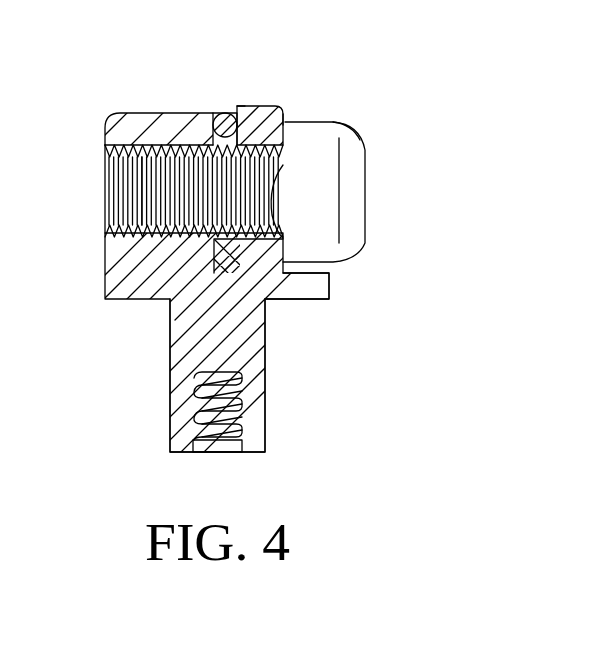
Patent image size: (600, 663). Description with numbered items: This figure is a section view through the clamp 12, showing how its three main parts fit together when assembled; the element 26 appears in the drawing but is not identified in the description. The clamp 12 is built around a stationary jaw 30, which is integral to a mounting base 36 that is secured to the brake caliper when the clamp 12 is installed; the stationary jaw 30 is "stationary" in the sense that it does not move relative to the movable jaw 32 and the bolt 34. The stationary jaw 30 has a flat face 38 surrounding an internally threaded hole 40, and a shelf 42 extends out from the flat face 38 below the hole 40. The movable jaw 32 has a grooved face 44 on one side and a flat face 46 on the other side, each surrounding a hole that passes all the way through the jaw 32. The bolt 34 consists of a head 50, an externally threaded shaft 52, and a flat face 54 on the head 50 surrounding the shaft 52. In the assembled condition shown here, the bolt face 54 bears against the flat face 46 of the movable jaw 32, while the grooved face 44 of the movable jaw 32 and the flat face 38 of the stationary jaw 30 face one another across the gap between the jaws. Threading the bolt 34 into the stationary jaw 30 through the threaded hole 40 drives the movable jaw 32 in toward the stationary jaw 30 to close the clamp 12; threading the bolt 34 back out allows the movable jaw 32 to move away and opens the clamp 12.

The clamp 12 is at (366, 66).
The body 26 is at (215, 255).
The stationary jaw 30 is at (190, 122).
The movable jaw 32 is at (250, 112).
The bolt 34 is at (367, 203).
The mounting base 36 is at (178, 334).
The flat face 38 is at (224, 115).
The internally threaded hole 40 is at (105, 196).
The shelf 42 is at (316, 281).
The grooved face 44 is at (231, 110).
The flat face 46 is at (283, 118).
The head 50 is at (350, 140).
The externally threaded shaft 52 is at (167, 178).
The flat face 54 is at (275, 205).